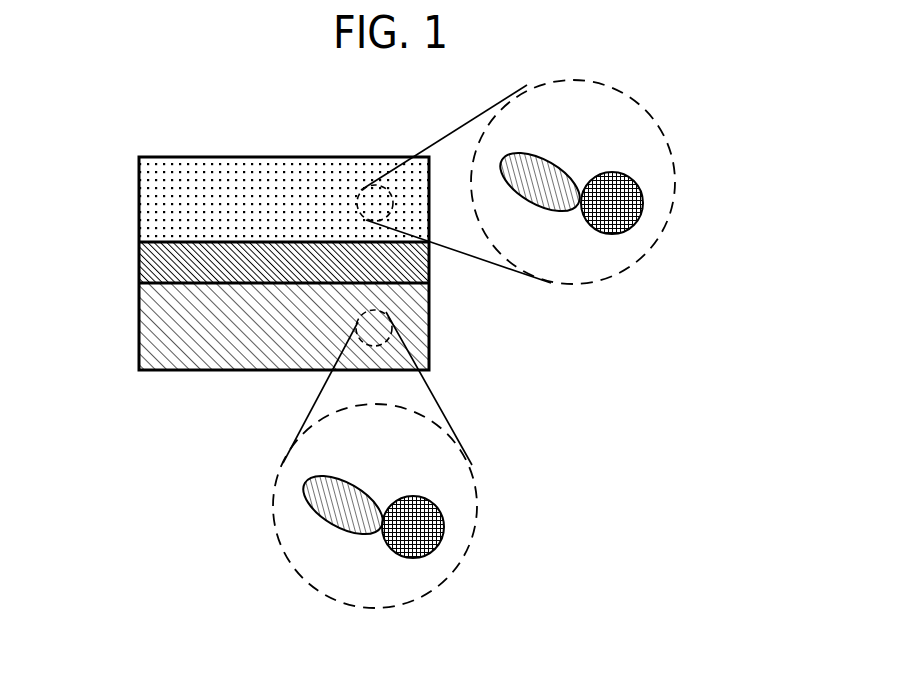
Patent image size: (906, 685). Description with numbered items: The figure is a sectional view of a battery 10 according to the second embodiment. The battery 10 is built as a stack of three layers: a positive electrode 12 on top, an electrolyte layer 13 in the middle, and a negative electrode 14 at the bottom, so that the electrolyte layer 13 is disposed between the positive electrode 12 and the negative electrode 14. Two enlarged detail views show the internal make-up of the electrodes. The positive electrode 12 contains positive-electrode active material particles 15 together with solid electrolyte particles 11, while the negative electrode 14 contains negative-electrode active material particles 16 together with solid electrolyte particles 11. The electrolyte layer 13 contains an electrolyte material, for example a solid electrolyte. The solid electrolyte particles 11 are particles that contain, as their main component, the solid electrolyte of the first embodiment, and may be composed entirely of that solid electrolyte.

The battery 10 is at (249, 126).
The solid electrolyte particles 11 is at (555, 190).
The positive electrode 12 is at (155, 200).
The electrolyte layer 13 is at (153, 267).
The negative electrode 14 is at (155, 327).
The positive-electrode active material particles 15 is at (623, 202).
The negative-electrode active material particles 16 is at (430, 522).